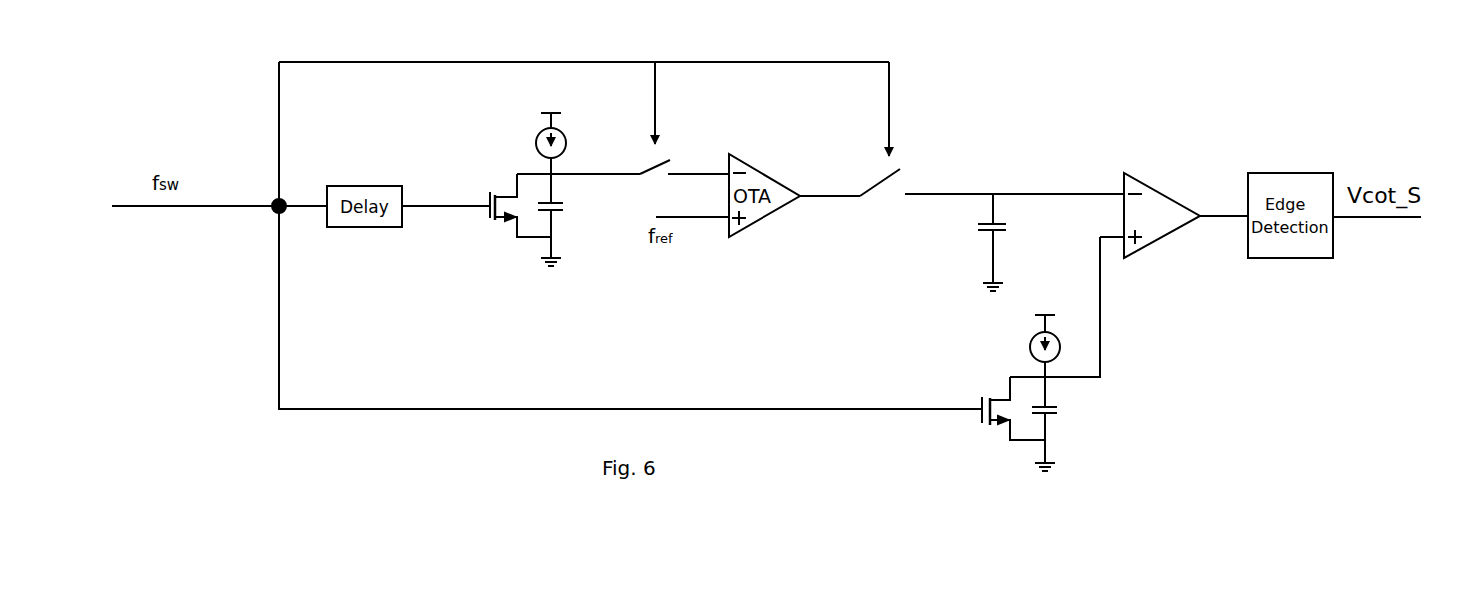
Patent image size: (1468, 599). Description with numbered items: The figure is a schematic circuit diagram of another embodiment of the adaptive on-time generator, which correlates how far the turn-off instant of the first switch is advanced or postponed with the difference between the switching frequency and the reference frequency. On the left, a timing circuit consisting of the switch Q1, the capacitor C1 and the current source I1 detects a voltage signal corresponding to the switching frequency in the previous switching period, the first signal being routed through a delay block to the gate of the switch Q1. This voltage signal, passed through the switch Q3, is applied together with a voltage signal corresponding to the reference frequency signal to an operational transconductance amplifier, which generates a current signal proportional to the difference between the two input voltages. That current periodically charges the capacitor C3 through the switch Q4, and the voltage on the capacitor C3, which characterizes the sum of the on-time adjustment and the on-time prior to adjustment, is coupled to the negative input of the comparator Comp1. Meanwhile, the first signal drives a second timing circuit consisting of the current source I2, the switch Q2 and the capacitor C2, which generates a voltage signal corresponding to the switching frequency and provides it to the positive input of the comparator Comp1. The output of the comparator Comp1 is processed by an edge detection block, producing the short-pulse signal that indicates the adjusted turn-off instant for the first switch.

The switch Q1 is at (516, 215).
The switch Q2 is at (1011, 420).
The switch Q3 is at (655, 187).
The switch Q4 is at (880, 203).
The capacitor C1 is at (567, 220).
The capacitor C2 is at (1063, 424).
The capacitor C3 is at (1007, 242).
The current source I1 is at (537, 143).
The current source I2 is at (1033, 346).
The comparator Comp1 is at (1162, 215).